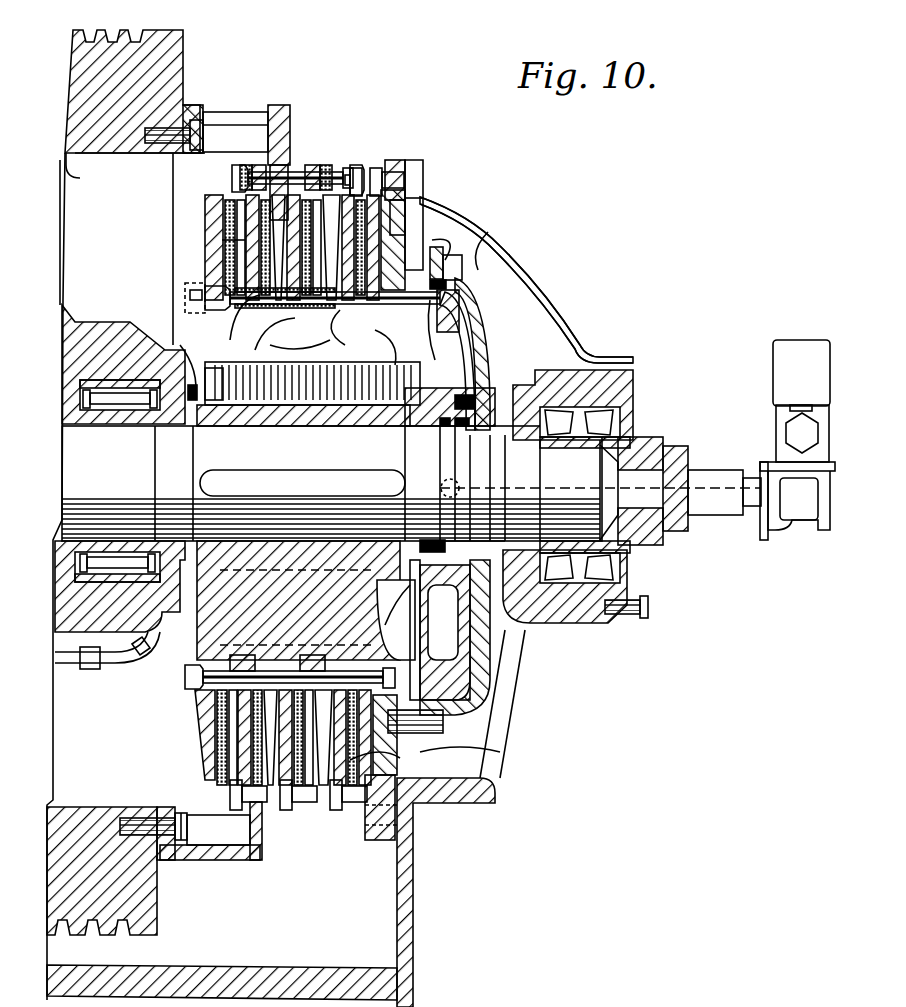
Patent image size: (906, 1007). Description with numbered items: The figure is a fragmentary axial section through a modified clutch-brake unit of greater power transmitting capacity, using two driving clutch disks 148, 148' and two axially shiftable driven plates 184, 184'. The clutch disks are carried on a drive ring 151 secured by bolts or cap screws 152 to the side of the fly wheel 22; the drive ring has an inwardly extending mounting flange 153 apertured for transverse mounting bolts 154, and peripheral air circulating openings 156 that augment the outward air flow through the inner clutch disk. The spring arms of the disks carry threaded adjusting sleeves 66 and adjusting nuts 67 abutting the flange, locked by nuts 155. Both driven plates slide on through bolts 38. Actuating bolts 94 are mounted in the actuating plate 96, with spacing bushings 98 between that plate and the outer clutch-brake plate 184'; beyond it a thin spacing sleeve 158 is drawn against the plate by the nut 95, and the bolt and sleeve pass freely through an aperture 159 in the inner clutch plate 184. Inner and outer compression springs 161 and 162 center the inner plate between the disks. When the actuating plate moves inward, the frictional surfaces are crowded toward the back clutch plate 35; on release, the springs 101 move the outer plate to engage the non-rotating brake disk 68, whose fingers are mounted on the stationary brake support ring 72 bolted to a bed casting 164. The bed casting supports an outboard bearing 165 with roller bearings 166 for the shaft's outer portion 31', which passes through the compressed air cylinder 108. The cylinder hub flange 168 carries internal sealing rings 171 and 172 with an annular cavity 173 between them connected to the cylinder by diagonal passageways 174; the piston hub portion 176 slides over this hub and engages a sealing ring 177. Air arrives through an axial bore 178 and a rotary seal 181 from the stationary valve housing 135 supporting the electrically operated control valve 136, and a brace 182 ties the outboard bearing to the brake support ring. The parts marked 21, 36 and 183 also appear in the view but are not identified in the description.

The shaft 21 is at (118, 476).
The fly wheel 22 is at (158, 40).
The outer portion of the driven shaft 31' is at (575, 464).
The back clutch plate 35 is at (215, 214).
The hub 36 is at (400, 206).
The through bolts 38 is at (195, 677).
The threaded adjusting sleeves 66 is at (243, 165).
The adjusting nuts 67 is at (258, 165).
The non-rotating brake disk 68 is at (415, 245).
The stationary brake support ring 72 is at (395, 172).
The actuating bolts 94 is at (410, 285).
The nut 95 is at (200, 300).
The actuating plate 96 is at (435, 362).
The spacing bushings 98 is at (470, 320).
The springs 101 is at (265, 408).
The compressed air cylinder 108 is at (482, 340).
The stationary valve housing 135 is at (770, 535).
The electrically operated control valve 136 is at (780, 424).
The inner driving clutch disk 148 is at (251, 736).
The outer driving clutch disk 148' is at (196, 732).
The drive ring 151 is at (282, 105).
The bolts or cap screws 152 is at (205, 118).
The mounting flange 153 is at (288, 160).
The transverse mounting bolts 154 is at (232, 172).
The lock nuts 155 is at (232, 188).
The peripheral air circulating openings 156 is at (240, 112).
The spacing sleeve 158 is at (225, 268).
The aperture 159 is at (280, 312).
The inner compression springs 161 is at (235, 312).
The outer compression springs 162 is at (312, 312).
The bed casting 164 is at (397, 917).
The outboard bearing 165 is at (600, 610).
The roller bearings 166 is at (560, 600).
The hub flange 168 is at (424, 483).
The internal sealing ring 171 is at (584, 483).
The internal sealing ring 172 is at (480, 541).
The annular cavity 173 is at (465, 540).
The diagonal passageways 174 is at (462, 450).
The hub portion of the piston 176 is at (408, 430).
The sealing ring 177 is at (343, 636).
The axial bore 178 is at (557, 500).
The rotary seal 181 is at (680, 548).
The brace 182 is at (553, 291).
The bearing 183 is at (118, 410).
The inner clutch plate 184 is at (290, 643).
The outer clutch-brake plate 184' is at (320, 631).